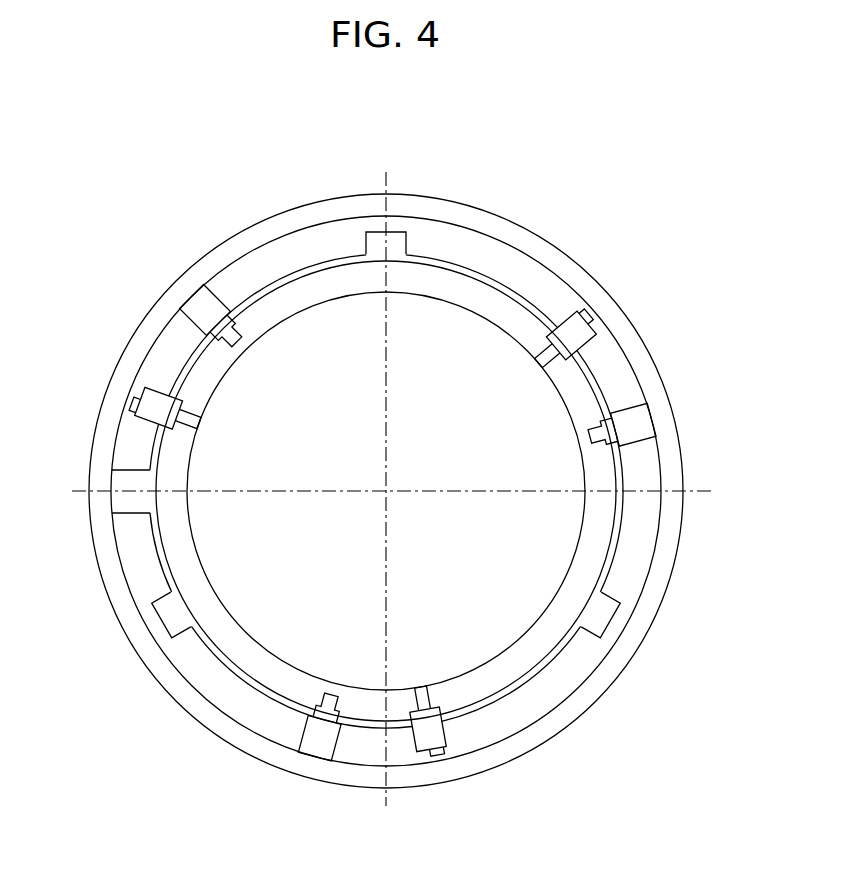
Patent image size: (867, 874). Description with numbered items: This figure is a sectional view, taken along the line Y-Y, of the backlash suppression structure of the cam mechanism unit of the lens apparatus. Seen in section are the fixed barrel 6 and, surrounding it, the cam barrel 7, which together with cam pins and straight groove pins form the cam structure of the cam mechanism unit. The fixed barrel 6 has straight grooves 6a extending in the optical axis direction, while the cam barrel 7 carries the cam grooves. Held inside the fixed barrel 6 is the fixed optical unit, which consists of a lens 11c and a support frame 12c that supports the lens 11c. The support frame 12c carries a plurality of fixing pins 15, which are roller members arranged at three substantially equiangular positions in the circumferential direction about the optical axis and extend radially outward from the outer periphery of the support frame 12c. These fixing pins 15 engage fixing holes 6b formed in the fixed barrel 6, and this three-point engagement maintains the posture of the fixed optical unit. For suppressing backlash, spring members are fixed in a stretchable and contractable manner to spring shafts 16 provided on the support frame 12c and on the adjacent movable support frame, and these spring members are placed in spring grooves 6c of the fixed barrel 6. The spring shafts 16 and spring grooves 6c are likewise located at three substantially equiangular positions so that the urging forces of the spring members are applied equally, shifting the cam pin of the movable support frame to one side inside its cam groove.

The fixed barrel 6 is at (507, 256).
The straight grooves 6a is at (400, 232).
The fixing holes 6b is at (196, 303).
The spring grooves 6c is at (594, 325).
The cam barrel 7 is at (589, 698).
The lens 11c is at (240, 545).
The support frame 12c is at (180, 568).
The fixing pins 15 is at (216, 325).
The spring shafts 16 is at (568, 335).